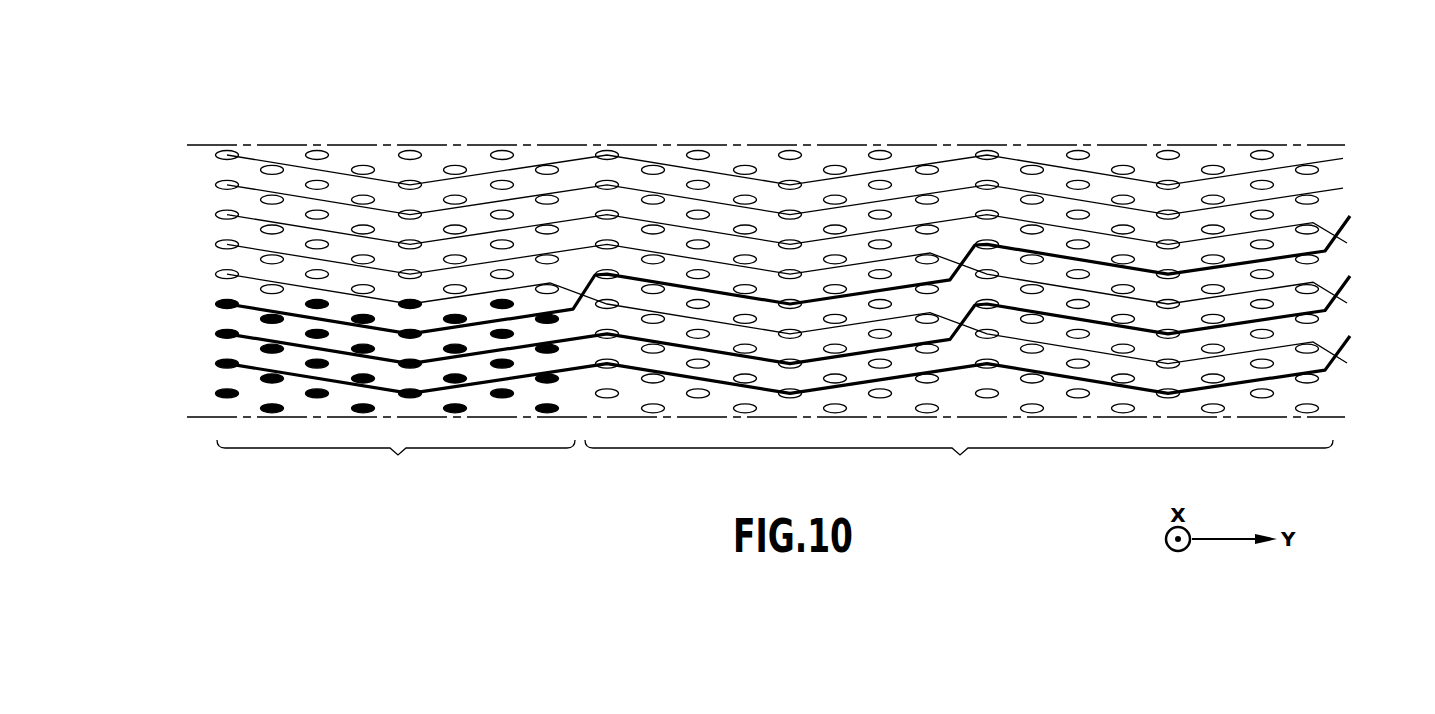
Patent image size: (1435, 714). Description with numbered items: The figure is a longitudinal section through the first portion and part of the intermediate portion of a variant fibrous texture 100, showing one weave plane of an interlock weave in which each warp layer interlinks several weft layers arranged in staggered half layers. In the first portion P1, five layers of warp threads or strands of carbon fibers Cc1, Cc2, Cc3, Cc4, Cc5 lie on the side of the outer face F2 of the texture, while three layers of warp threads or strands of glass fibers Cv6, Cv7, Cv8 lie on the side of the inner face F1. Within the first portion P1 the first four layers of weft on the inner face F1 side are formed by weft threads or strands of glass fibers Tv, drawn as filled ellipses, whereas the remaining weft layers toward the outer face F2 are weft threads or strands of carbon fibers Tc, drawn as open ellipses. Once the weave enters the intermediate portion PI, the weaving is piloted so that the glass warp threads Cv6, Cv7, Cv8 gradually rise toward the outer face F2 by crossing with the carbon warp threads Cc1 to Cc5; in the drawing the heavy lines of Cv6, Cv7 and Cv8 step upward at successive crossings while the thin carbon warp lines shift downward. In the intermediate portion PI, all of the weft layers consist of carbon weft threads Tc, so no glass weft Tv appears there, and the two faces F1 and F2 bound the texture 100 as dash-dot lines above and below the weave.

The fibrous texture 100 is at (365, 95).
The warp threads or strands of carbon fibers Cc1 is at (227, 155).
The warp threads or strands of carbon fibers Cc2 is at (227, 185).
The warp threads or strands of carbon fibers Cc3 is at (227, 215).
The warp threads or strands of carbon fibers Cc4 is at (227, 244).
The warp threads or strands of carbon fibers Cc5 is at (227, 274).
The warp threads or strands of glass fibers Cv6 is at (227, 304).
The warp threads or strands of glass fibers Cv7 is at (227, 334).
The warp threads or strands of glass fibers Cv8 is at (227, 364).
The weft threads or strands of carbon fibers Tc is at (743, 314).
The weft threads or strands of glass fibers Tv is at (317, 398).
The inner face F1 is at (208, 417).
The outer face F2 is at (1211, 146).
The first portion P1 is at (396, 459).
The intermediate portion PI is at (959, 459).